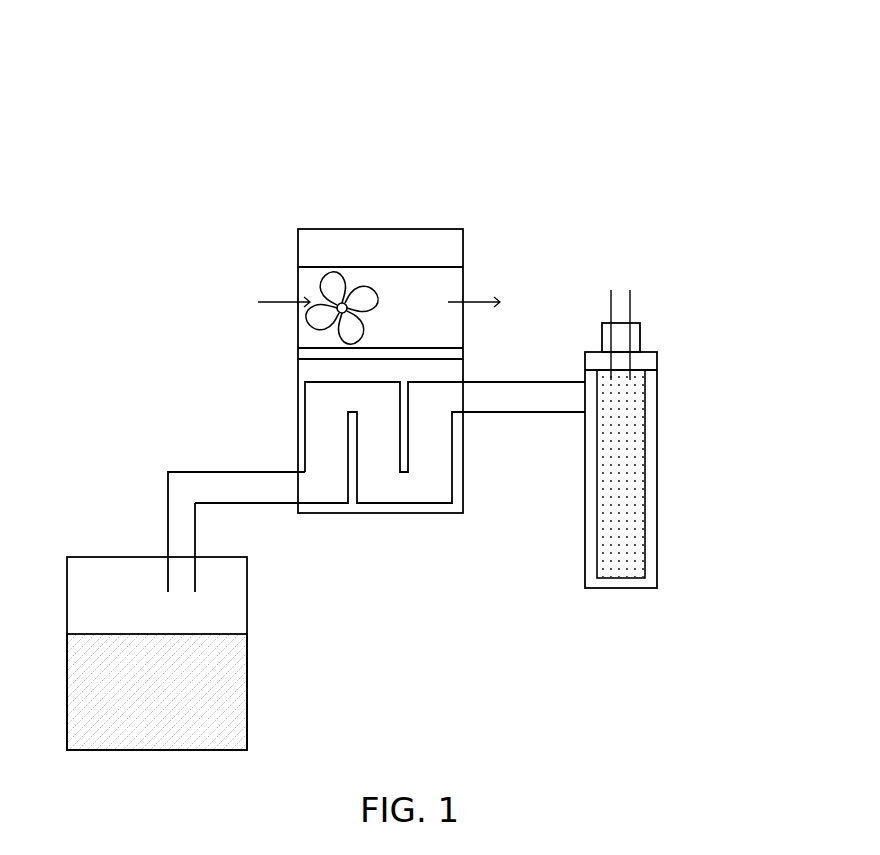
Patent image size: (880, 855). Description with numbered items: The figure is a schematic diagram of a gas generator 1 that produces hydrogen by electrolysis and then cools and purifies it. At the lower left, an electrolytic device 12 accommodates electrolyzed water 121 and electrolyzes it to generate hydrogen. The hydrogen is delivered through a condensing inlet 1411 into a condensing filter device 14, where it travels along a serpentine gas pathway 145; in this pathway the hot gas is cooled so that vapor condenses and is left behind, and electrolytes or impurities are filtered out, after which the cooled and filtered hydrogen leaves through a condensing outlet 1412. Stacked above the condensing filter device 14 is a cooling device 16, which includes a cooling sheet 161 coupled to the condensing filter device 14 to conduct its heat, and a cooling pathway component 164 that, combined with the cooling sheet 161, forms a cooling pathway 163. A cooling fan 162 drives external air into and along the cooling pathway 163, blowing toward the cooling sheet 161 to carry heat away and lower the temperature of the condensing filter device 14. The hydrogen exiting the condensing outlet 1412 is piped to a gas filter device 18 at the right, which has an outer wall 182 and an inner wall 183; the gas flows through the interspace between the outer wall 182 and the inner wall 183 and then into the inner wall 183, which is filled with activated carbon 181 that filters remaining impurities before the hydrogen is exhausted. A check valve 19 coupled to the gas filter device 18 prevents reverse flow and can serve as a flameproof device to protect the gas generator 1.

The gas generator 1 is at (373, 102).
The electrolytic device 12 is at (98, 562).
The electrolyzed water 121 is at (225, 702).
The condensing filter device 14 is at (446, 530).
The condensing inlet 1411 is at (298, 482).
The condensing outlet 1412 is at (463, 400).
The gas pathway 145 is at (327, 480).
The cooling device 16 is at (256, 212).
The cooling sheet 161 is at (308, 353).
The cooling fan 162 is at (317, 287).
The cooling pathway 163 is at (448, 287).
The cooling pathway component 164 is at (368, 243).
The gas filter device 18 is at (684, 411).
The activated carbon 181 is at (632, 512).
The outer wall 182 is at (648, 588).
The inner wall 183 is at (648, 437).
The check valve 19 is at (638, 333).